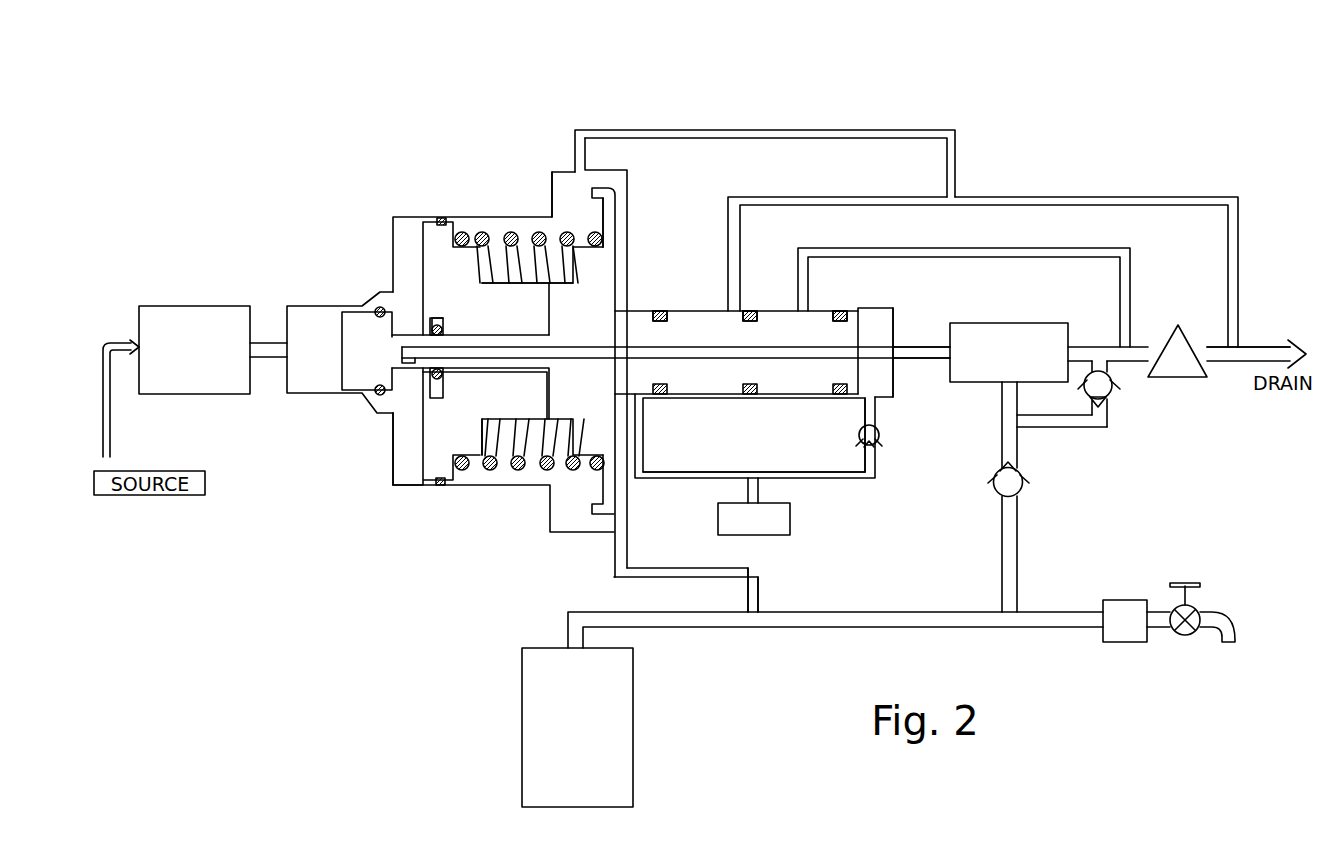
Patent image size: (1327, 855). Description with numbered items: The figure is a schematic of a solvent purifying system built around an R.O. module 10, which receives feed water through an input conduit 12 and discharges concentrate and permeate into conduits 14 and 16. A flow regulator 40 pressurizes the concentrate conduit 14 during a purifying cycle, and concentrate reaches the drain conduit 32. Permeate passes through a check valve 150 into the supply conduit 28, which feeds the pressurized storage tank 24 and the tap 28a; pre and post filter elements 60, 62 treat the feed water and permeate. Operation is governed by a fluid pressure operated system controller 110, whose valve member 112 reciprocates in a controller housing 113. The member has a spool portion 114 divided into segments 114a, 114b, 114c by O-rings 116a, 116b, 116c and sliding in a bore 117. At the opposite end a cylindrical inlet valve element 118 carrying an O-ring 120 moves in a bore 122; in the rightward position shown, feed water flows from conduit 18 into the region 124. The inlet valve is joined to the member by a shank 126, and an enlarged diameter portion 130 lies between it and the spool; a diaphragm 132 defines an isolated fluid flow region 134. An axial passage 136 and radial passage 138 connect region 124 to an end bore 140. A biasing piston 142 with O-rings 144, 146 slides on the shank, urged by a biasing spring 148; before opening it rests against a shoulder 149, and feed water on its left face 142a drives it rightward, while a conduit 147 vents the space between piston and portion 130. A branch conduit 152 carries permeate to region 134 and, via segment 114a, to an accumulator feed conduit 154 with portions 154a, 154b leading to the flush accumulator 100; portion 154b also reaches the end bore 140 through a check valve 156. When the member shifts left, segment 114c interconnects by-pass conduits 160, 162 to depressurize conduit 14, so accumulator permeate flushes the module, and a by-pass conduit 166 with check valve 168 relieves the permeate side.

The R.O. module 10 is at (1013, 329).
The input conduit 12 is at (911, 351).
The concentrate conduit 14 is at (1082, 356).
The permeate conduit 16 is at (1013, 449).
The feed water conduit 18 is at (268, 355).
The pressurized storage tank 24 is at (622, 687).
The supply conduit 28 is at (855, 610).
The tap 28a is at (1218, 613).
The drain conduit 32 is at (1256, 358).
The flow regulator 40 is at (1168, 372).
The pre filter element 60 is at (170, 362).
The post filter element 62 is at (1115, 635).
The flush accumulator 100 is at (741, 531).
The system controller 110 is at (462, 186).
The valve member 112 is at (568, 335).
The controller housing 113 is at (537, 216).
The spool portion 114 is at (718, 343).
The first fluid flow controlling segment 114a is at (640, 318).
The second fluid flow controlling segment 114b is at (697, 383).
The third fluid flow controlling segment 114c is at (790, 383).
The O-ring 116a is at (665, 400).
The O-ring 116b is at (752, 400).
The O-ring 116c is at (831, 402).
The bore 117 is at (868, 306).
The cylindrical inlet valve element 118 is at (353, 316).
The O-ring 120 is at (377, 396).
The bore 122 is at (303, 312).
The valve region 124 is at (405, 452).
The shank 126 is at (468, 336).
The enlarged diameter portion 130 is at (612, 228).
The diaphragm 132 is at (630, 182).
The isolated fluid flow region 134 is at (625, 507).
The axial passage 136 is at (584, 356).
The radial passage 138 is at (405, 349).
The end bore 140 is at (894, 382).
The biasing piston 142 is at (483, 398).
The left face 142a is at (424, 420).
The O-ring 144 is at (433, 326).
The O-ring 146 is at (440, 220).
The conduit 147 is at (800, 135).
The biasing spring 148 is at (490, 471).
The shoulder 149 is at (409, 475).
The check valve 150 is at (1023, 489).
The branch conduit 152 is at (728, 571).
The accumulator feed conduit 154 is at (814, 487).
The input/output portion 154a is at (679, 478).
The input/output portion 154b is at (876, 464).
The check valve 156 is at (880, 430).
The by-pass conduit 160 is at (735, 238).
The by-pass conduit 162 is at (845, 252).
The by-pass conduit 166 is at (1083, 428).
The check valve 168 is at (1113, 388).